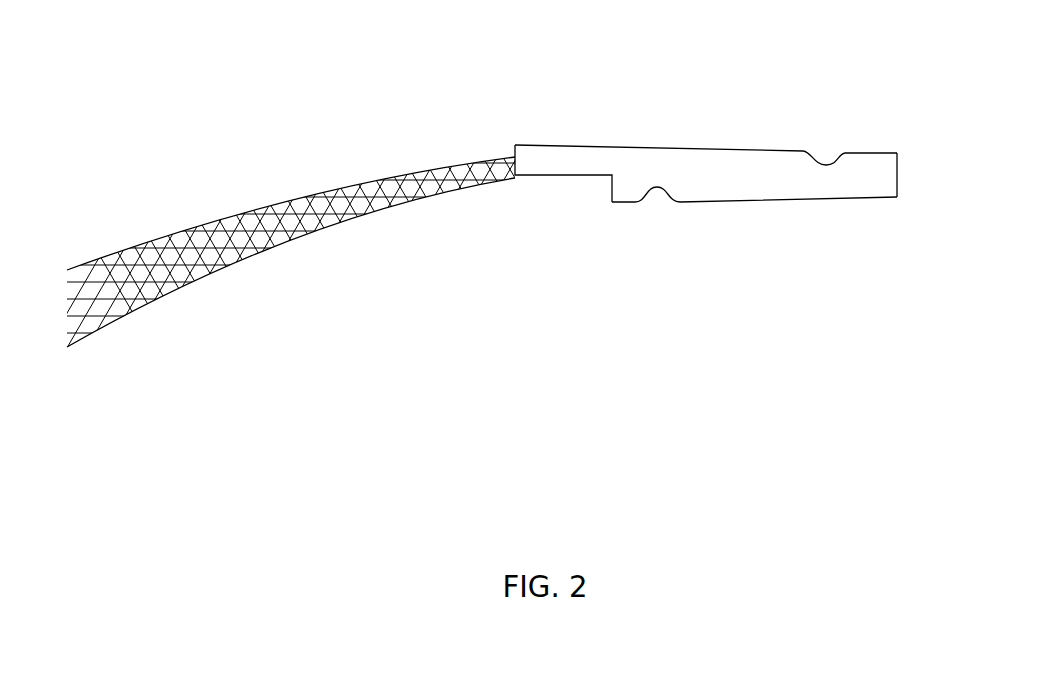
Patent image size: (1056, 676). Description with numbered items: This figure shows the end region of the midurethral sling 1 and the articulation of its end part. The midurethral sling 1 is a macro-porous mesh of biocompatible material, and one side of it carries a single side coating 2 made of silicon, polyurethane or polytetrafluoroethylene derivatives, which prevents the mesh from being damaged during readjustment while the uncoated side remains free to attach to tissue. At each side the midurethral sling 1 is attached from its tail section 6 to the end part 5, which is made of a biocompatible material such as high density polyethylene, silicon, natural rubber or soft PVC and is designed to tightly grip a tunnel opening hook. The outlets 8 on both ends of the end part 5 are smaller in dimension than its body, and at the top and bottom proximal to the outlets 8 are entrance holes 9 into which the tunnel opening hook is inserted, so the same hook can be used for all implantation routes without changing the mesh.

The midurethral sling 1 is at (110, 328).
The single side coating 2 is at (327, 235).
The midurethral sling end part 5 is at (745, 210).
The midurethral sling end part tail section 6 is at (538, 135).
The end part outlet holes 8 is at (917, 185).
The tunnel opening hook insertion holes 9 is at (828, 147).